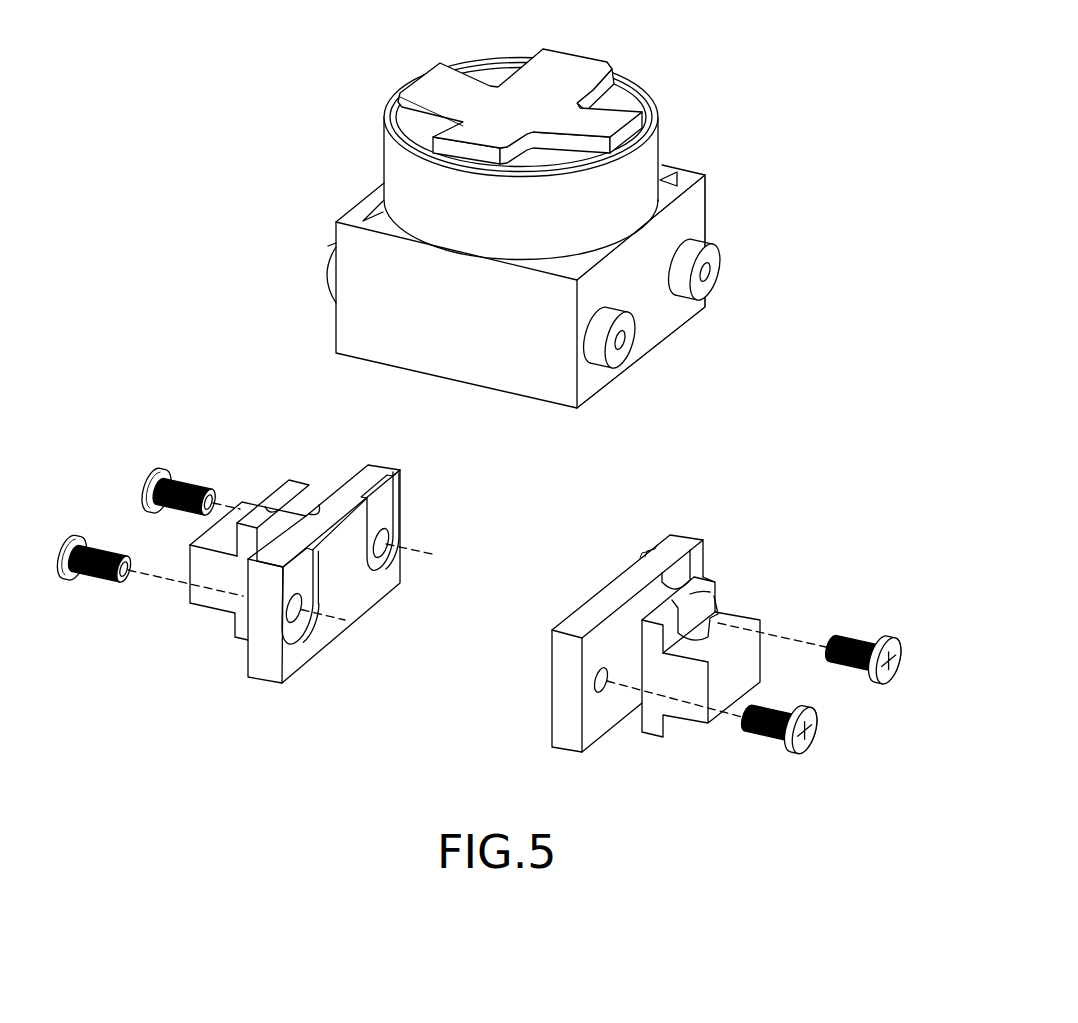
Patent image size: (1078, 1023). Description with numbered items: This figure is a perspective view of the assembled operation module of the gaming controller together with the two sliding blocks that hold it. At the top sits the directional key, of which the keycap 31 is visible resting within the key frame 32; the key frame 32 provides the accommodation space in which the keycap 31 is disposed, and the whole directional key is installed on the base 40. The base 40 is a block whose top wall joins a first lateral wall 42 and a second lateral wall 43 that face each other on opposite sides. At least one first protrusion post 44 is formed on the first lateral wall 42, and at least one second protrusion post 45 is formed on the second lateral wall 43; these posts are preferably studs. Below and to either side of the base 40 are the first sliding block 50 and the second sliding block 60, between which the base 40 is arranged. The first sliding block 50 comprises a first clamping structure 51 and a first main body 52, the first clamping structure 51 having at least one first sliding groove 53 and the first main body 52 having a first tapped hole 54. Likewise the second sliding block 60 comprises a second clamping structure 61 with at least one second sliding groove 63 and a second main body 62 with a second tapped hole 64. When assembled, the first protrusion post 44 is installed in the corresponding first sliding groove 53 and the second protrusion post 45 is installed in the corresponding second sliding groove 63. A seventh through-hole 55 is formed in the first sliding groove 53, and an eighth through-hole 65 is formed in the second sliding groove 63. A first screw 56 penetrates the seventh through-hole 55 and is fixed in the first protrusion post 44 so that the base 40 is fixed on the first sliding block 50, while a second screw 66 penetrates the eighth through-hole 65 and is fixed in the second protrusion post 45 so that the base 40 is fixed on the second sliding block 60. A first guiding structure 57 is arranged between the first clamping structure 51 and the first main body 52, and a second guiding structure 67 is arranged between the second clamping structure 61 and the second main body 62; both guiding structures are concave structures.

The keycap 31 is at (568, 67).
The key frame 32 is at (652, 172).
The base 40 is at (523, 286).
The first lateral wall 42 is at (660, 323).
The second lateral wall 43 is at (365, 197).
The first protrusion post 44 is at (710, 255).
The second protrusion post 45 is at (330, 277).
The first sliding block 50 is at (668, 647).
The first clamping structure 51 is at (625, 587).
The first main body 52 is at (731, 656).
The first sliding groove 53 is at (655, 548).
The first tapped hole 54 is at (697, 622).
The seventh through-hole 55 is at (608, 684).
The first screw 56 is at (863, 640).
The first guiding structure 57 is at (680, 552).
The second sliding block 60 is at (313, 574).
The second clamping structure 61 is at (348, 608).
The second main body 62 is at (217, 602).
The second sliding groove 63 is at (382, 512).
The second tapped hole 64 is at (268, 507).
The eighth through-hole 65 is at (381, 552).
The second screw 66 is at (175, 480).
The second guiding structure 67 is at (313, 500).